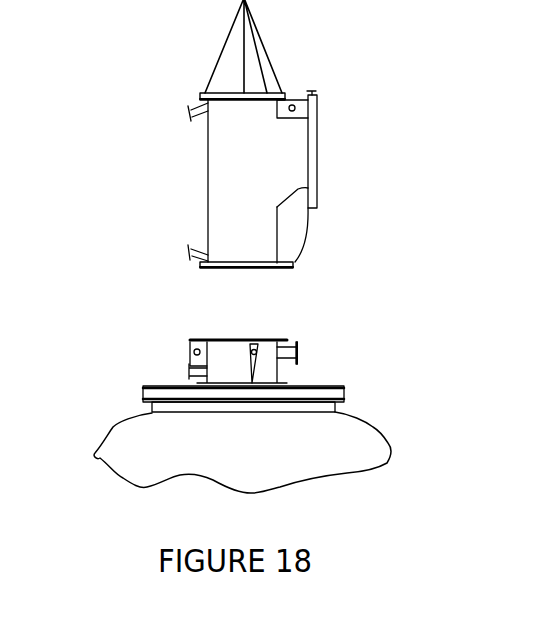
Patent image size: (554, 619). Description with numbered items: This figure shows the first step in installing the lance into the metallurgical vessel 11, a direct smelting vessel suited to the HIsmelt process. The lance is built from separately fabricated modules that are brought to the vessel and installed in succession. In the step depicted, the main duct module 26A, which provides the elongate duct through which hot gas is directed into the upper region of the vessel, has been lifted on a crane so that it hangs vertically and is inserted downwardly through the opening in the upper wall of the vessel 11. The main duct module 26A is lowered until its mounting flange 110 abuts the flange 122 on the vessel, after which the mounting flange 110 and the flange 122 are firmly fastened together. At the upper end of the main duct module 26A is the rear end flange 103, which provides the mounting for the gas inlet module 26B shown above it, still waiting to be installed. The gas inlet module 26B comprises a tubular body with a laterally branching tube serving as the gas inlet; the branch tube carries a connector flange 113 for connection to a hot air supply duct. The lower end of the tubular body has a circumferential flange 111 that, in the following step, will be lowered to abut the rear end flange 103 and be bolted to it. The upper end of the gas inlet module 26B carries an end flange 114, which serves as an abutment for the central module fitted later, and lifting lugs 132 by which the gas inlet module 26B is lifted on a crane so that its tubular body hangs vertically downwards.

The gas inlet module 26B is at (158, 205).
The main duct module 26A is at (150, 367).
The end flange 114 is at (270, 90).
The lifting lugs 132 is at (298, 100).
The connector flange 113 is at (317, 158).
The circumferential flange 111 is at (283, 268).
The rear end flange 103 is at (287, 342).
The mounting flange 110 is at (343, 386).
The vessel flange 122 is at (345, 405).
The metallurgical vessel 11 is at (108, 438).